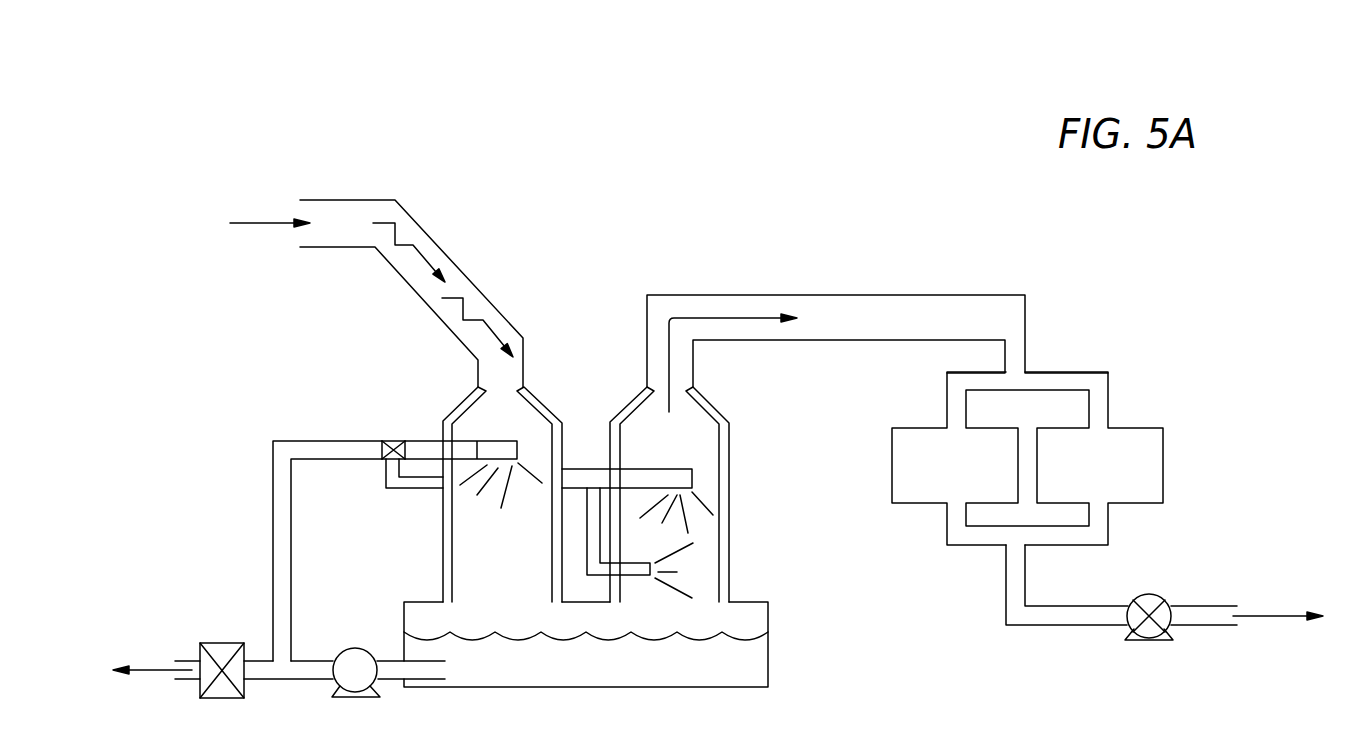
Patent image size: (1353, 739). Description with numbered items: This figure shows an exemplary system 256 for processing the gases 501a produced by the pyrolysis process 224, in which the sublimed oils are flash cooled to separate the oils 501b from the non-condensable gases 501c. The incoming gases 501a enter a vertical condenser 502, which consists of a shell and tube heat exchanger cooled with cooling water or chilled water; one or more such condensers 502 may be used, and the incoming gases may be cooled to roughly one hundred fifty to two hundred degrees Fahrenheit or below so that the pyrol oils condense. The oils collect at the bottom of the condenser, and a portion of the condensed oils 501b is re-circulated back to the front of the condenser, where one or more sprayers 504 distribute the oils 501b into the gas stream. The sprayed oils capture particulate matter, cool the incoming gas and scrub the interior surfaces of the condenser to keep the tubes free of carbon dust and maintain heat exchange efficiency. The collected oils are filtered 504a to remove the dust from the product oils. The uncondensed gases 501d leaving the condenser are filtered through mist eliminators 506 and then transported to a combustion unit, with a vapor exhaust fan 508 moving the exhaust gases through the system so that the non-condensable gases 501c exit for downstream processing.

The scrubber system 256 is at (426, 130).
The pyrolysis process 224 is at (252, 223).
The gases from the pyrolysis process 501a is at (413, 257).
The vertical condenser 502 is at (540, 407).
The sprayers 504 is at (490, 490).
The filter 504a is at (220, 643).
The condensed oils 501b is at (748, 653).
The uncondensed gases 501d is at (722, 315).
The mist eliminators 506 is at (890, 465).
The vapor exhaust fan 508 is at (1150, 593).
The non-condensable gases 501c is at (1272, 617).